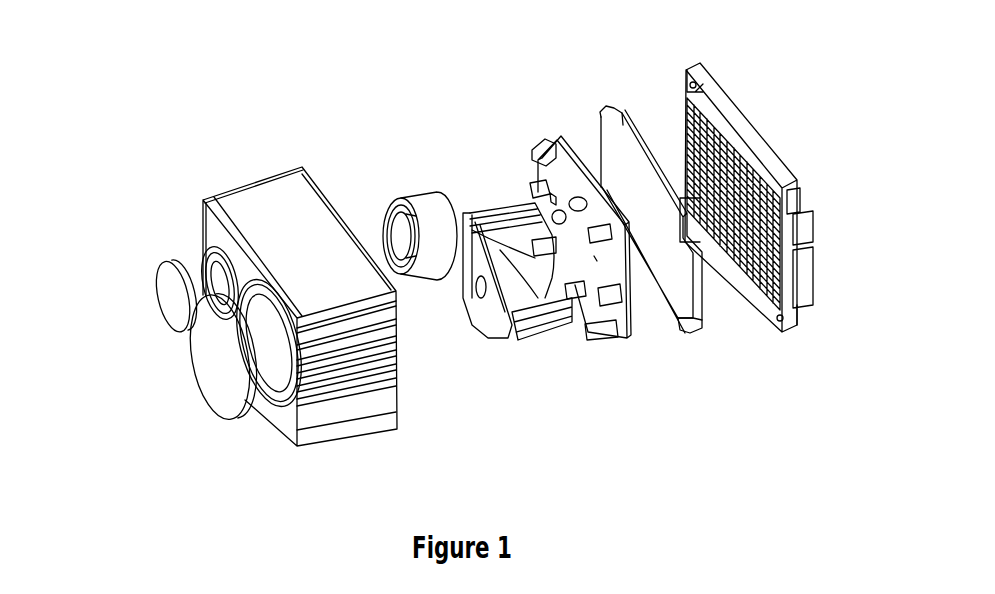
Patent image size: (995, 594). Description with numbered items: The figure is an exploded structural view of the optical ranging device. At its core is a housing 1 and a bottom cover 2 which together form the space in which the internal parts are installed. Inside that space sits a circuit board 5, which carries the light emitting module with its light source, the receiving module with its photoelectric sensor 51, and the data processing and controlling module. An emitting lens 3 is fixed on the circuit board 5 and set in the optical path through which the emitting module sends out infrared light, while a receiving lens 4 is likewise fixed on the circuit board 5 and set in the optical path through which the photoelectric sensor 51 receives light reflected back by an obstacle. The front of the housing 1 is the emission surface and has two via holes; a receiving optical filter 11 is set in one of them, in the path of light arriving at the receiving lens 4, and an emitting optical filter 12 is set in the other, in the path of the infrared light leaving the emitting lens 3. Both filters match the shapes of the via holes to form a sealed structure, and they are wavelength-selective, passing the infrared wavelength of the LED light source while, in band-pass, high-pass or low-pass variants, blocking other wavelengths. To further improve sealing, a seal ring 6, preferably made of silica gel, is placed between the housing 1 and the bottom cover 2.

The housing 1 is at (254, 194).
The receiving optical filter 11 is at (175, 288).
The emitting optical filter 12 is at (222, 380).
The receiving lens 4 is at (422, 205).
The emitting lens 3 is at (487, 320).
The circuit board 5 is at (557, 138).
The photoelectric sensor 51 is at (527, 188).
The seal ring 6 is at (700, 318).
The bottom cover 2 is at (750, 137).